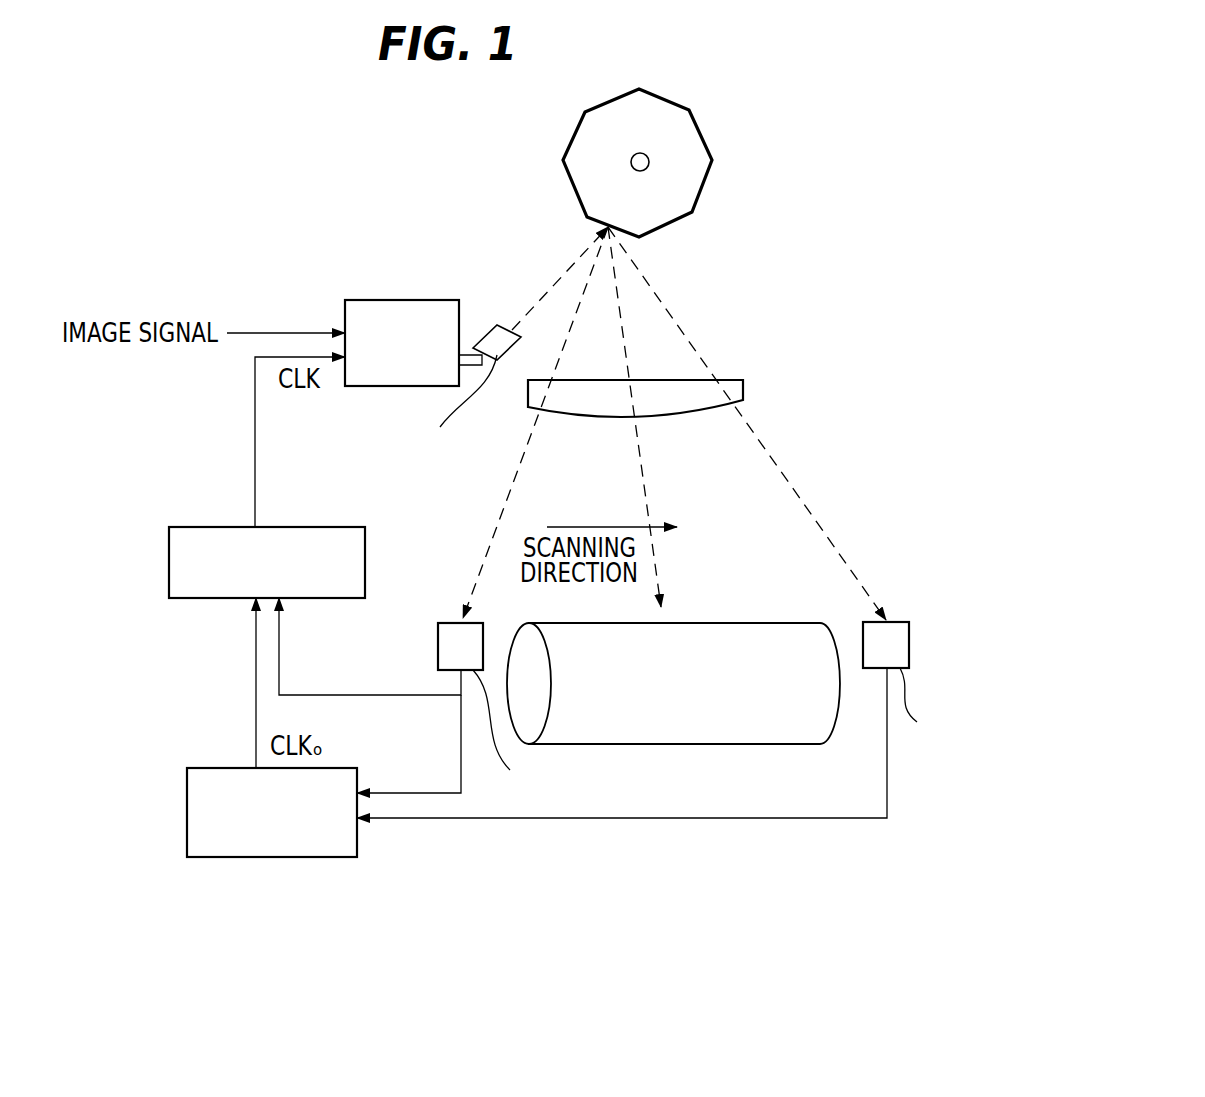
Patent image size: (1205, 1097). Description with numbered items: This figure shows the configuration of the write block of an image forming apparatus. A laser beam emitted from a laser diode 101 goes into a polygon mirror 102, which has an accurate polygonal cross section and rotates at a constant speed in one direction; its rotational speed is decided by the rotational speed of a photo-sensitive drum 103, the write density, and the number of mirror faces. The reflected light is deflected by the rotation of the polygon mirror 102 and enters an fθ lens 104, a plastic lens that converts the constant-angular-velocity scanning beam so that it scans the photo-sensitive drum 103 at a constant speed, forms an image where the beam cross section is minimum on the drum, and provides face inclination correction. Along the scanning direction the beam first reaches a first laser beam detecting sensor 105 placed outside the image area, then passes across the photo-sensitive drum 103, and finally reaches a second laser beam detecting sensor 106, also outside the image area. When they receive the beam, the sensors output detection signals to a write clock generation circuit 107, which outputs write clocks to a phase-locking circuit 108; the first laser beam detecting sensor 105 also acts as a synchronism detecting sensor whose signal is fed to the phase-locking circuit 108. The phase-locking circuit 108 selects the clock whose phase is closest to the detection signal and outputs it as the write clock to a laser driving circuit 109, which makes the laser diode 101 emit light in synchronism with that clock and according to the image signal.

The laser diode 101 is at (497, 325).
The polygon mirror 102 is at (692, 155).
The photo-sensitive drum 103 is at (732, 632).
The fθ lens 104 is at (700, 395).
The first laser beam detecting sensor 105 is at (448, 623).
The second laser beam detecting sensor 106 is at (900, 630).
The write clock generation circuit 107 is at (317, 857).
The phase-locking circuit 108 is at (192, 527).
The laser driving circuit 109 is at (372, 300).